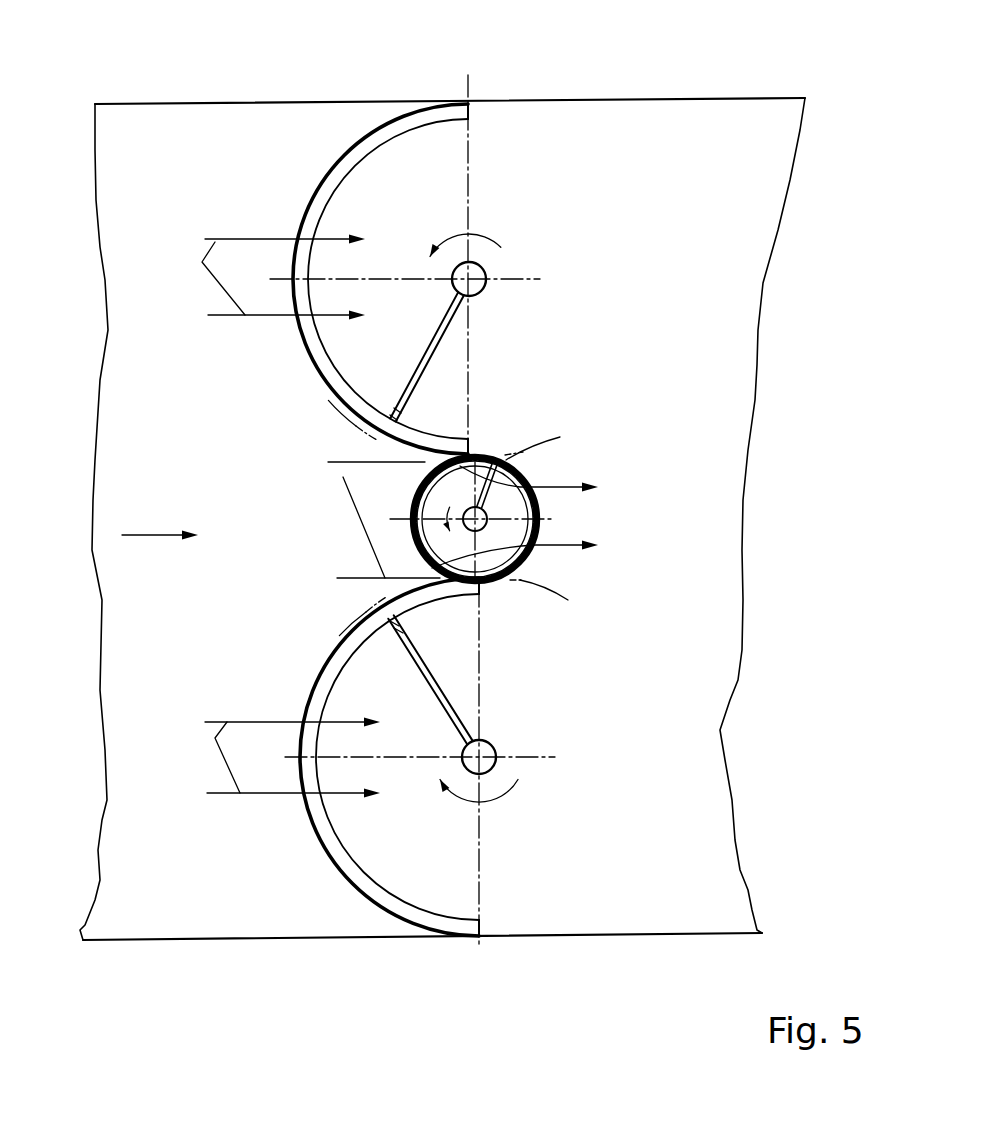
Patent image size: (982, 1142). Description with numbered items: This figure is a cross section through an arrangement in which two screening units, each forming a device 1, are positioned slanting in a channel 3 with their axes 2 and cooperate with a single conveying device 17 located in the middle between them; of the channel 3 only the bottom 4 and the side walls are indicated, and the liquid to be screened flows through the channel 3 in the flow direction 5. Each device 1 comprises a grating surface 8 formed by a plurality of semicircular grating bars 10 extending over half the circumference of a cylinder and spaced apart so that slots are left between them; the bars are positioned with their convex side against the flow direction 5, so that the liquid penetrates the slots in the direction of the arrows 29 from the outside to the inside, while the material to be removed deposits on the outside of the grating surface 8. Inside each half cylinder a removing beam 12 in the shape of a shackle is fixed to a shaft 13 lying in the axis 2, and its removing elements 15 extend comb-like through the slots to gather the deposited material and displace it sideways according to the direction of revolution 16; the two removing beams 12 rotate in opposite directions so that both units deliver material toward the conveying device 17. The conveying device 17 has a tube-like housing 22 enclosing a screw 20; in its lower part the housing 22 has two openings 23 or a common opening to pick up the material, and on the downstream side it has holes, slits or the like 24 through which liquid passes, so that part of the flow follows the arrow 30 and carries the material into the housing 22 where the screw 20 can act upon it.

The device 1 is at (277, 87).
The axis 2 is at (488, 273).
The channel 3 is at (113, 481).
The bottom 4 is at (147, 165).
The flow direction 5 is at (117, 512).
The grating surface 8 is at (349, 520).
The grating bars 10 is at (383, 126).
The removing beam 12 is at (413, 385).
The shaft 13 is at (486, 285).
The removing elements 15 is at (378, 455).
The direction of revolution 16 is at (492, 235).
The conveying device 17 is at (655, 503).
The screw 20 is at (649, 520).
The housing 22 is at (660, 519).
The opening 23 is at (675, 517).
The holes, slits or the like 24 is at (527, 559).
The arrows 29 is at (202, 262).
The arrow 30 is at (343, 477).